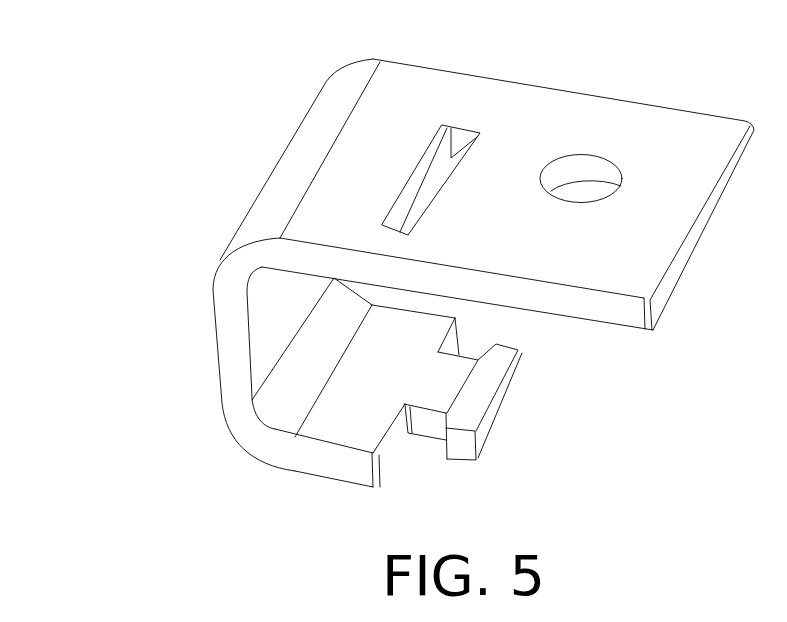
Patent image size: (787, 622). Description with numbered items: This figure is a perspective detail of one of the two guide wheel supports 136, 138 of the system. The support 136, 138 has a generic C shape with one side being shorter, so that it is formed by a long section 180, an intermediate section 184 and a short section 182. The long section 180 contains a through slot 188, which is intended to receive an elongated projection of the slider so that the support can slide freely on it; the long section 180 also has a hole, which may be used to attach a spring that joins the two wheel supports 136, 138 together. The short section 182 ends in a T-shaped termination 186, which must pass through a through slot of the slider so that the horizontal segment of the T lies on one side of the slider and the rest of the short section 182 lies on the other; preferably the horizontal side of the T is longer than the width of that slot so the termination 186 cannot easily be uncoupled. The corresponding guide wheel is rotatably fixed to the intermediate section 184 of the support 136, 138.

The wheel support 136 is at (391, 251).
The wheel support 138 is at (391, 251).
The long section 180 is at (570, 123).
The short section 182 is at (367, 400).
The intermediate section 184 is at (228, 330).
The T-shaped termination 186 is at (482, 410).
The through slot 188 is at (450, 162).